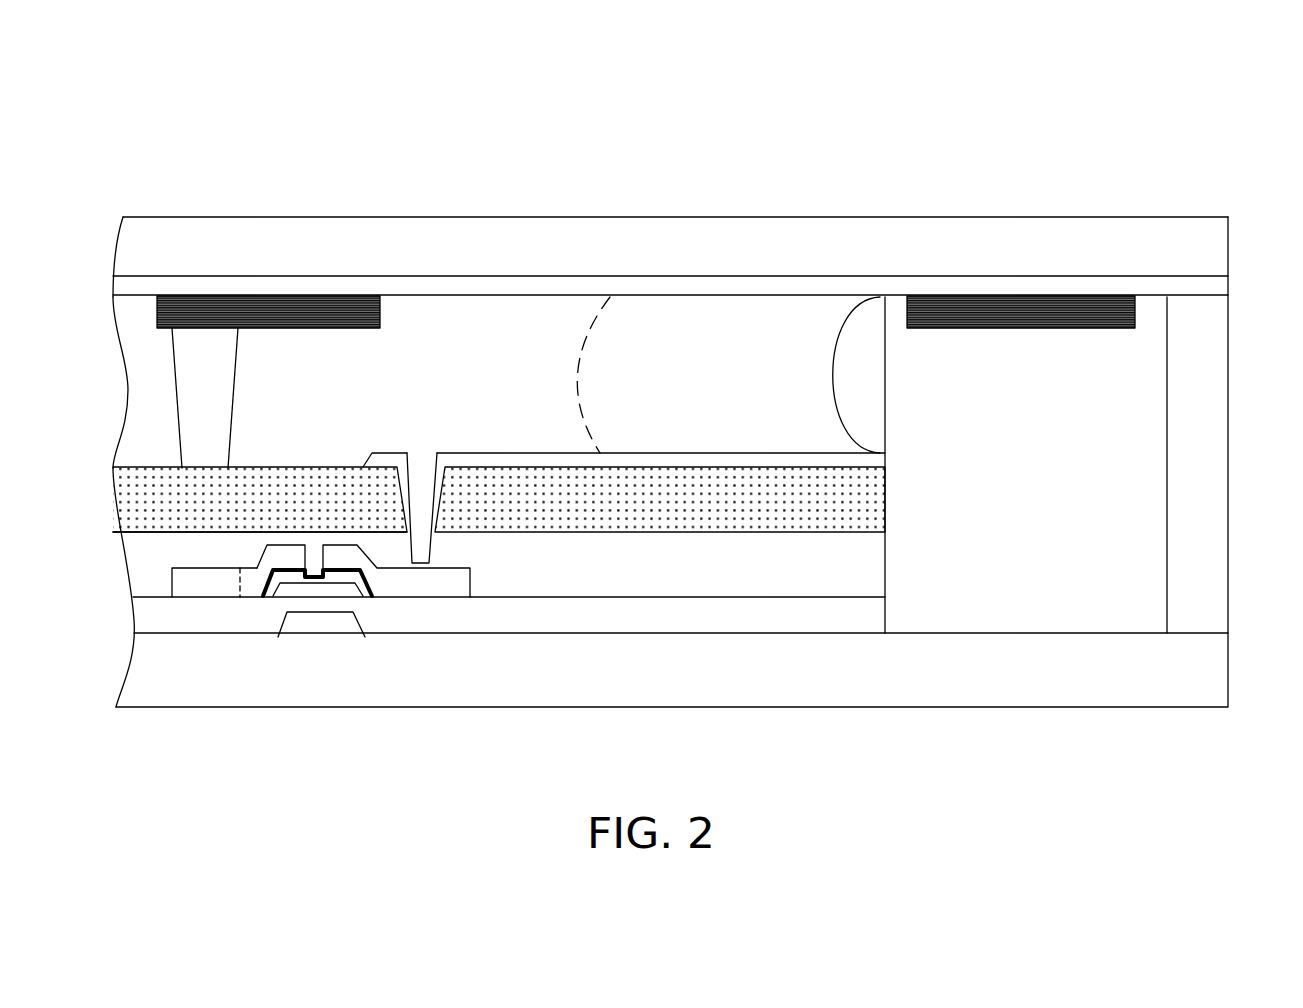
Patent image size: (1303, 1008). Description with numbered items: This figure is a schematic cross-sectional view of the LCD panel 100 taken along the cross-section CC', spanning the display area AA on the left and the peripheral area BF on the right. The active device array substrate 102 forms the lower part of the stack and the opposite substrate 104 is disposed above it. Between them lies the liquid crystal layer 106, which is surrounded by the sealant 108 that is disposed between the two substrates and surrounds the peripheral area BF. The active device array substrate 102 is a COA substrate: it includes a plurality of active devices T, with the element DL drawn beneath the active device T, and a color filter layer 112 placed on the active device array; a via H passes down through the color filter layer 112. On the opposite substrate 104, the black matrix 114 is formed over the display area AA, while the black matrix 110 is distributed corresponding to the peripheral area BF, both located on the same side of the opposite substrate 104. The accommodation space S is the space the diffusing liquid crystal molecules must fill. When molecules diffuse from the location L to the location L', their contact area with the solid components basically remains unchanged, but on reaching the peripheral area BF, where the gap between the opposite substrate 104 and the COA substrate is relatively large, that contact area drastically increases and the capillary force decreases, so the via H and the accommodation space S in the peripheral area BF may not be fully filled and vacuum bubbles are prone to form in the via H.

The LCD panel 100 is at (1226, 760).
The active device array substrate 102 is at (87, 456).
The opposite substrate 104 is at (87, 216).
The liquid crystal layer 106 is at (150, 344).
The sealant 108 is at (1213, 496).
The black matrix 110 is at (1120, 312).
The color filter layer 112 is at (307, 487).
The black matrix 114 is at (378, 313).
The via H is at (416, 466).
The active device T is at (258, 552).
The data line DL is at (187, 588).
The location L is at (580, 375).
The location L' is at (846, 375).
The accommodation space S is at (1072, 452).
The display area AA is at (900, 190).
The peripheral area BF is at (1135, 202).
The cross-section C-C' CC' is at (673, 126).